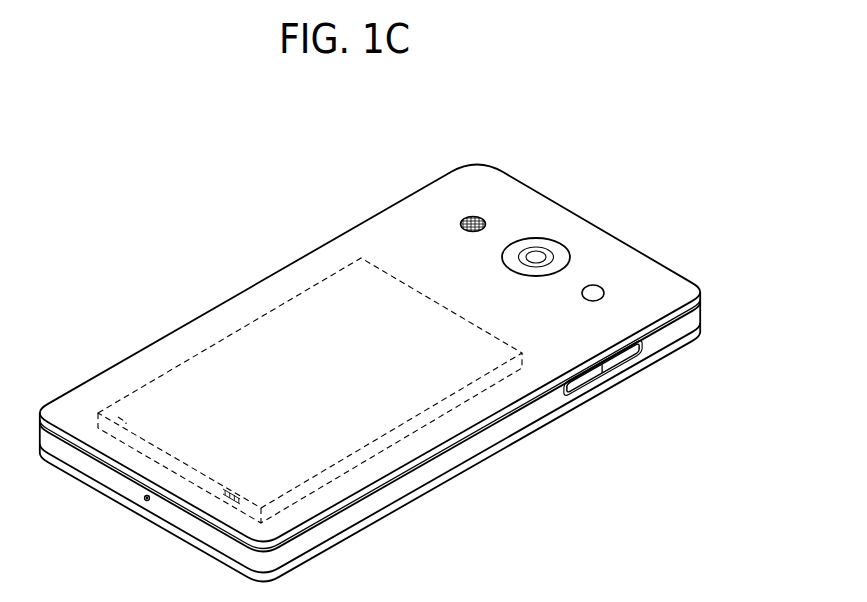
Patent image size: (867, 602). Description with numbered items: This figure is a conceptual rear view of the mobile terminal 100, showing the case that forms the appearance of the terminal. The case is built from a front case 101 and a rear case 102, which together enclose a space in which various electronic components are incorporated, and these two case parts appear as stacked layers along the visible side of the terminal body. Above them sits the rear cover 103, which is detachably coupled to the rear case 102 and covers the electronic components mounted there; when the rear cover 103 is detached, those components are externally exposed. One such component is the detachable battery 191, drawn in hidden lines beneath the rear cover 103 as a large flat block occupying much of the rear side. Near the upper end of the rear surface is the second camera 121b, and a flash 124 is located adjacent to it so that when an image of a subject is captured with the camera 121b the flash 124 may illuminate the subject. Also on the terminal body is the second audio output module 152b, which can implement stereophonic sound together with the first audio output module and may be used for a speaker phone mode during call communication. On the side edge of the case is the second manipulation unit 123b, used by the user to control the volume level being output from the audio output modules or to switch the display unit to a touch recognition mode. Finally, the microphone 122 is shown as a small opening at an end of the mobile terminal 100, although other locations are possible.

The mobile terminal 100 is at (228, 257).
The front case 101 is at (698, 333).
The rear case 102 is at (698, 315).
The rear cover 103 is at (700, 290).
The second camera 121b is at (538, 253).
The microphone 122 is at (143, 503).
The second manipulation unit 123b is at (595, 386).
The flash 124 is at (601, 284).
The second audio output module 152b is at (481, 216).
The battery 191 is at (398, 443).